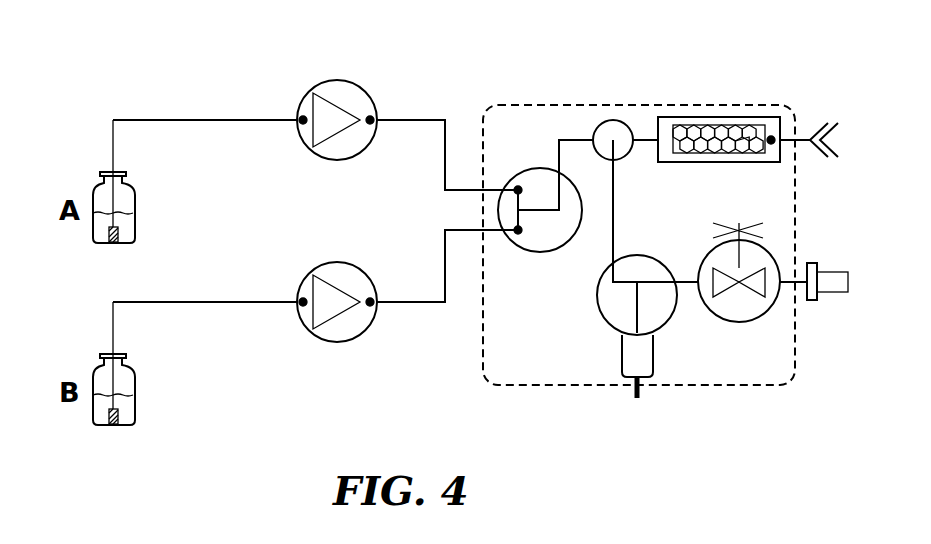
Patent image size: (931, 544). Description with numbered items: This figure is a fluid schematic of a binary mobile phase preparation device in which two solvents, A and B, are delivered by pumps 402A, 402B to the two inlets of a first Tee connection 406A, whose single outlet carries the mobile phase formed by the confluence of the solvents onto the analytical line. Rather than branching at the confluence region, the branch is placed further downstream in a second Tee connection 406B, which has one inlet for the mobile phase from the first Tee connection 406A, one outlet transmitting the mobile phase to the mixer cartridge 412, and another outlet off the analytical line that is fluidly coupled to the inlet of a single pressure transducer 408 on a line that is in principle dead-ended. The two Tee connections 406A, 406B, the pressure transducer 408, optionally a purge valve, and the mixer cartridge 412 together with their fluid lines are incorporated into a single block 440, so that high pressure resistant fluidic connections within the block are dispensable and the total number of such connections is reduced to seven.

The pump 402A is at (337, 104).
The pump 402B is at (337, 318).
The first Tee connection 406A is at (545, 210).
The second Tee connection 406B is at (609, 193).
The single pressure transducer 408 is at (641, 311).
The mixer cartridge 412 is at (734, 153).
The single block 440 is at (639, 263).